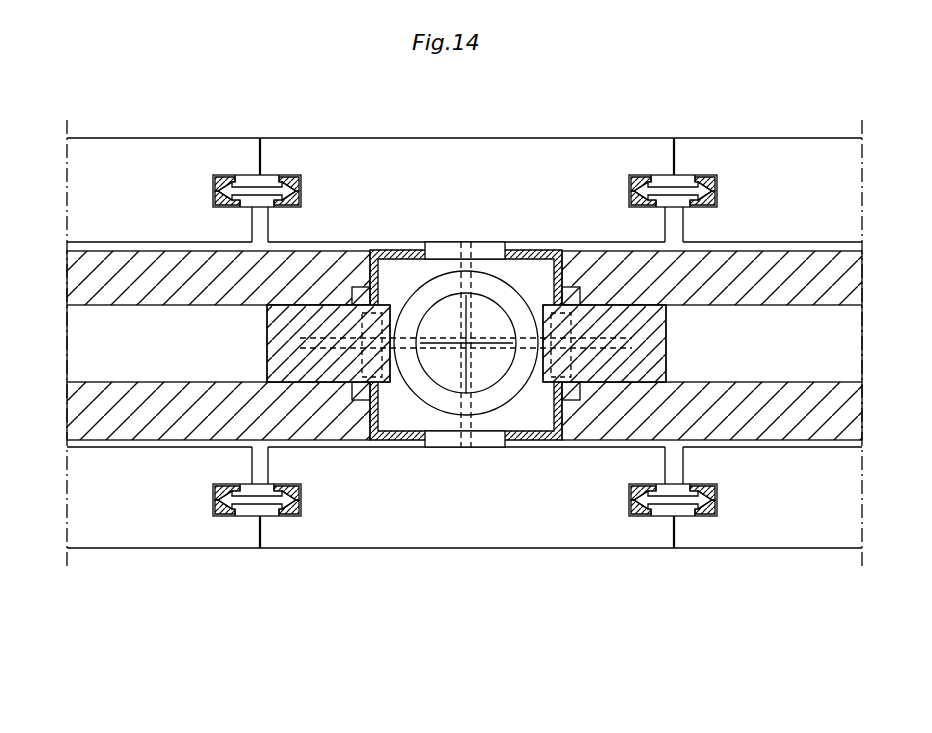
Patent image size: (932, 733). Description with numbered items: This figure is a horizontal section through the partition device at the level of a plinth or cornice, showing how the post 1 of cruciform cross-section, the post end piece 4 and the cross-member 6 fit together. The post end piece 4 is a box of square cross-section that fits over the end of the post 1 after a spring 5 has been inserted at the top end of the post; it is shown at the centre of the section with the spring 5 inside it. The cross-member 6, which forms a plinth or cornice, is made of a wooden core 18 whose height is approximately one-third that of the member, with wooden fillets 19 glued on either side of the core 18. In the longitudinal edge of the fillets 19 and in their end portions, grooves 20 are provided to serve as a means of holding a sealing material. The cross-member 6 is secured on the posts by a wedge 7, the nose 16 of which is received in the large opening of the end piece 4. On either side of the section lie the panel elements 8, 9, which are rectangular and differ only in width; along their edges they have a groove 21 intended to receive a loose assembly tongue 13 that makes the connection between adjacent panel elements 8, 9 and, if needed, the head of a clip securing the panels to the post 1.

The post 1 is at (468, 305).
The post end piece 4 is at (398, 252).
The spring 5 is at (497, 288).
The cross-member 6 is at (125, 443).
The wedge 7 is at (670, 305).
The panel element 8 is at (133, 155).
The panel element 9 is at (428, 150).
The loose tongue 13 is at (243, 195).
The nose of the wedge 16 is at (540, 373).
The wooden core 18 is at (857, 335).
The fillet 19 is at (857, 270).
The groove 20 is at (357, 292).
The groove 21 is at (268, 176).